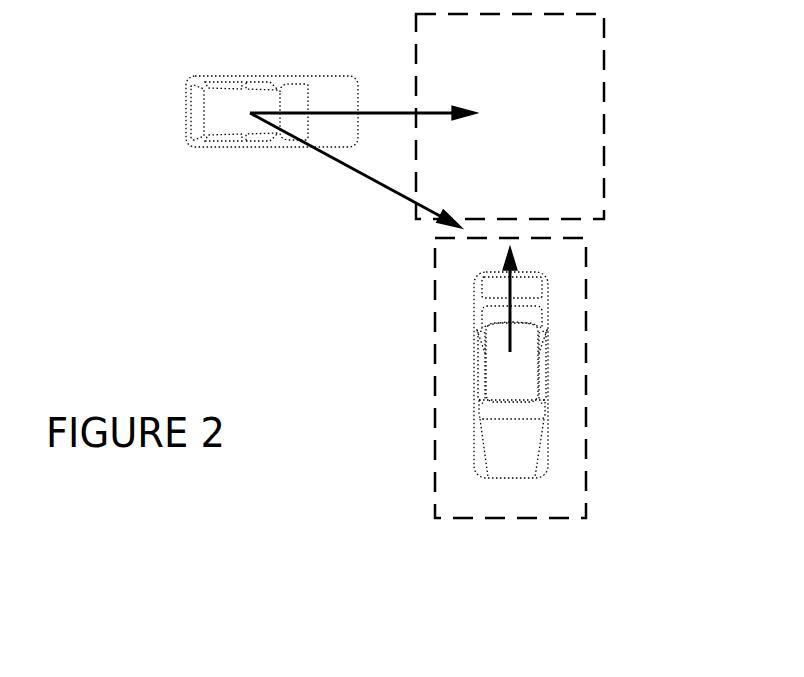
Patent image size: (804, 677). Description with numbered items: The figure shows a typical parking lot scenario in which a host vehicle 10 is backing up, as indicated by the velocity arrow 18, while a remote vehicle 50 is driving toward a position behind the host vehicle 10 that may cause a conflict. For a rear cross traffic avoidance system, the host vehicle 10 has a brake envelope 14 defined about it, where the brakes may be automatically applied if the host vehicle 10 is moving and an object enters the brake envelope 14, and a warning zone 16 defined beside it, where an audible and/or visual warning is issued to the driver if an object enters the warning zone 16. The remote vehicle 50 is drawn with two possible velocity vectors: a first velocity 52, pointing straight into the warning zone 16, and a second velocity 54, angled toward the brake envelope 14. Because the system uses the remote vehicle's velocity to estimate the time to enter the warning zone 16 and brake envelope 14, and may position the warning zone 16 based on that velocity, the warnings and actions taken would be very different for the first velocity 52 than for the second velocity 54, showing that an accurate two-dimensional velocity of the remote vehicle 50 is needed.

The host vehicle 10 is at (474, 435).
The brake envelope 14 is at (435, 330).
The warning zone 16 is at (604, 86).
The velocity arrow 18 is at (520, 258).
The remote vehicle 50 is at (187, 125).
The first velocity 52 is at (394, 108).
The second velocity 54 is at (385, 187).